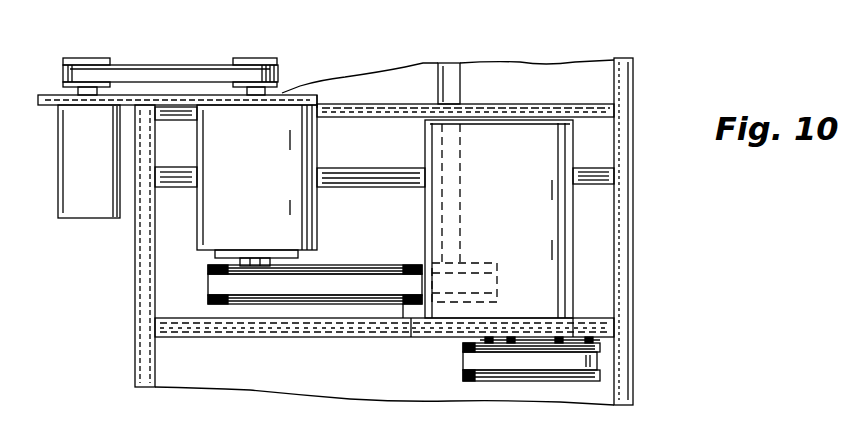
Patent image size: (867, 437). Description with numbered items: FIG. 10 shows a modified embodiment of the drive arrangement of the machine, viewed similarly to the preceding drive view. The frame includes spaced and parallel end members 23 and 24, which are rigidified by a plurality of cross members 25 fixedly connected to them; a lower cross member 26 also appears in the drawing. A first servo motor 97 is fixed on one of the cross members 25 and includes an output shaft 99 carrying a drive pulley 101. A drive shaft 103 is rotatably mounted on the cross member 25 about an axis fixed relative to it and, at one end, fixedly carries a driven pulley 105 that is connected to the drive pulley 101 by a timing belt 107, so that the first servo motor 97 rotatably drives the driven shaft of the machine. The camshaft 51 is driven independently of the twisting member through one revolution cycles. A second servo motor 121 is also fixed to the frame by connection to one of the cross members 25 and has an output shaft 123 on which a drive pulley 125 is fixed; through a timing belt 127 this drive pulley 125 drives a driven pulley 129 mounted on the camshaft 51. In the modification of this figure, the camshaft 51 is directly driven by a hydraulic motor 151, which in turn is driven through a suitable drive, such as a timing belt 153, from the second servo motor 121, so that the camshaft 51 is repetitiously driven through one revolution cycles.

The end member 23 is at (625, 143).
The end member 24 is at (140, 281).
The cross member 25 is at (176, 112).
The lower cross member 26 is at (220, 334).
The camshaft 51 is at (453, 193).
The first servo motor 97 is at (560, 226).
The output shaft 99 is at (502, 337).
The drive pulley 101 is at (465, 352).
The drive shaft 103 is at (572, 338).
The driven pulley 105 is at (593, 382).
The timing belt 107 is at (593, 360).
The second servo motor 121 is at (83, 198).
The output shaft 123 is at (272, 233).
The drive pulley 125 is at (290, 300).
The timing belt 127 is at (378, 283).
The driven pulley 129 is at (412, 300).
The hydraulic motor 151 is at (270, 185).
The timing belt 153 is at (180, 73).